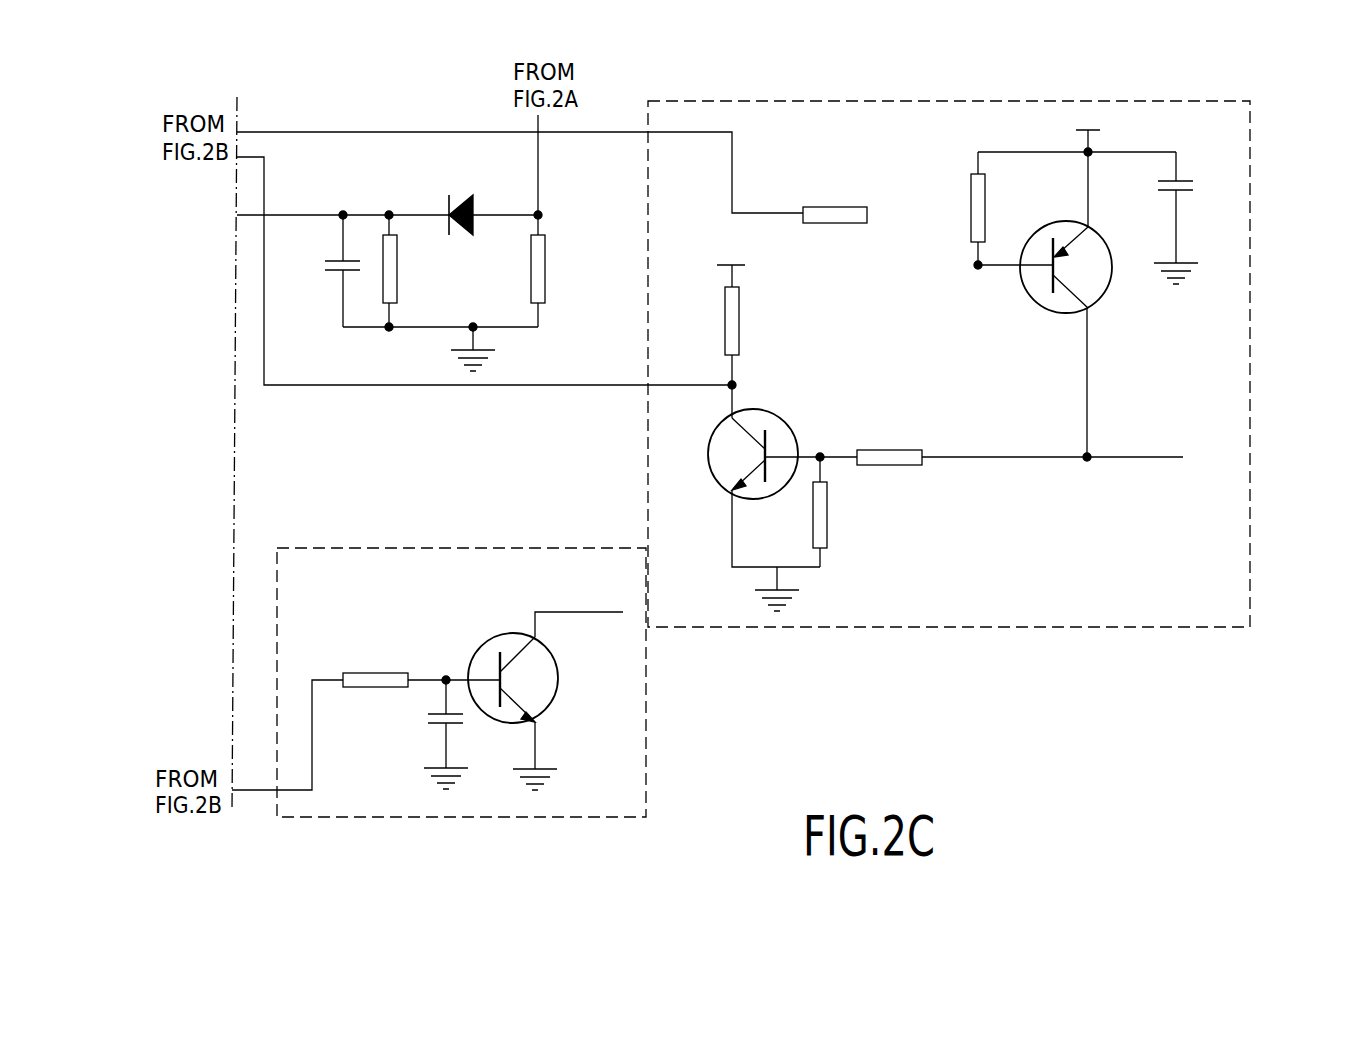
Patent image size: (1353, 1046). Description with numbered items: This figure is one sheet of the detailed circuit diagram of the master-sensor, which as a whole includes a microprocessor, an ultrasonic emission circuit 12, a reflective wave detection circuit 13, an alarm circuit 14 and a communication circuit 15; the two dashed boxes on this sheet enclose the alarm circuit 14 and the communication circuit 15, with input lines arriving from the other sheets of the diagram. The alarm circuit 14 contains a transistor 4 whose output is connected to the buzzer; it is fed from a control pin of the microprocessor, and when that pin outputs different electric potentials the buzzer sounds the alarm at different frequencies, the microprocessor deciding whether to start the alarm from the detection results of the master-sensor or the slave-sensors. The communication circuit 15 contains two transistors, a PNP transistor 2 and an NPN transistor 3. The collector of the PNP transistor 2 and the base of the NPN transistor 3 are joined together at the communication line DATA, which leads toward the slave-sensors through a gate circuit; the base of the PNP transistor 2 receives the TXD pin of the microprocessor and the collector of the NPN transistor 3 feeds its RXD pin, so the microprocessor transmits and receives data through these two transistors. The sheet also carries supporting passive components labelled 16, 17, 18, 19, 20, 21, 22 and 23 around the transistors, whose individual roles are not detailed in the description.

The alarm circuit 14 is at (469, 682).
The communication circuit 15 is at (985, 364).
The diode D2 2 is at (473, 214).
The transistor Q3 3 is at (733, 454).
The transistor Q4 4 is at (534, 678).
The ultrasonic emission circuit 12 is at (326, 271).
The reflective wave detection circuit 13 is at (1193, 207).
The resistor R16 16 is at (835, 214).
The resistor R17 17 is at (996, 208).
The resistor R18 18 is at (558, 281).
The resistor R19 19 is at (410, 271).
The resistor R20 20 is at (747, 321).
The resistor R21 21 is at (889, 457).
The resistor R22 22 is at (837, 512).
The resistor R23 23 is at (375, 659).